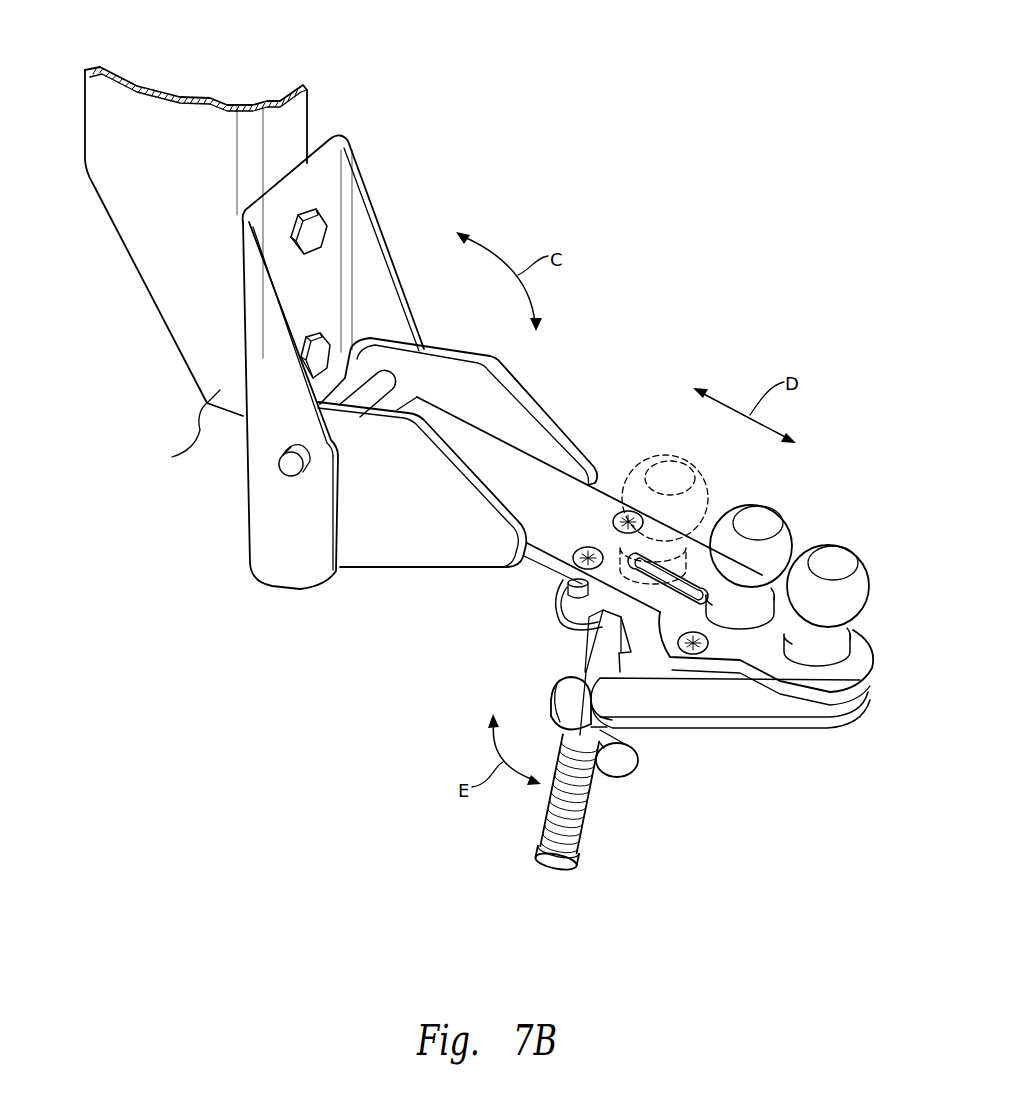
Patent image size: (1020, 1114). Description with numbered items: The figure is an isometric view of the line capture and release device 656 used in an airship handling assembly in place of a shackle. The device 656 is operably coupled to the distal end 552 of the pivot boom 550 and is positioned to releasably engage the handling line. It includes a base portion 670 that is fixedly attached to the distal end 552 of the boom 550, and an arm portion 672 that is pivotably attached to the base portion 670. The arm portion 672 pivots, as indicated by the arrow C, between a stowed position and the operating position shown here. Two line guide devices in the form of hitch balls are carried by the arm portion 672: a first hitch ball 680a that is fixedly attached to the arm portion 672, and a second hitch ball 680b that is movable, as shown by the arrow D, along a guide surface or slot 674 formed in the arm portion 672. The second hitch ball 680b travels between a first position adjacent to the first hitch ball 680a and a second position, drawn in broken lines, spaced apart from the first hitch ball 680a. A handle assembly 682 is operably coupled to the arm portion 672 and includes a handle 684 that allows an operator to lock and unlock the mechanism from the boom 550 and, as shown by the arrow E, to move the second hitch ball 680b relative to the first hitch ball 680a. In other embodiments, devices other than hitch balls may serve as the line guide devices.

The pivot boom 550 is at (305, 115).
The distal end 552 is at (176, 457).
The line capture and release device 656 is at (686, 284).
The base portion 670 is at (320, 182).
The arm portion 672 is at (500, 468).
The slot 674 is at (697, 572).
The first hitch ball 680a is at (838, 560).
The second hitch ball 680b is at (762, 518).
The handle assembly 682 is at (727, 745).
The handle 684 is at (583, 830).